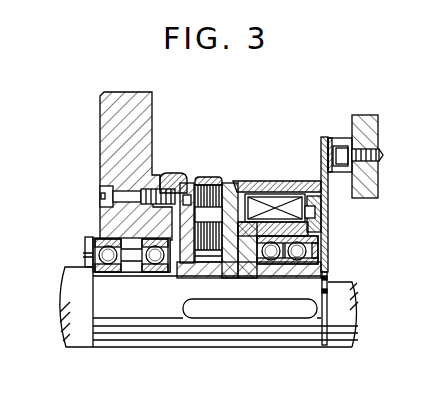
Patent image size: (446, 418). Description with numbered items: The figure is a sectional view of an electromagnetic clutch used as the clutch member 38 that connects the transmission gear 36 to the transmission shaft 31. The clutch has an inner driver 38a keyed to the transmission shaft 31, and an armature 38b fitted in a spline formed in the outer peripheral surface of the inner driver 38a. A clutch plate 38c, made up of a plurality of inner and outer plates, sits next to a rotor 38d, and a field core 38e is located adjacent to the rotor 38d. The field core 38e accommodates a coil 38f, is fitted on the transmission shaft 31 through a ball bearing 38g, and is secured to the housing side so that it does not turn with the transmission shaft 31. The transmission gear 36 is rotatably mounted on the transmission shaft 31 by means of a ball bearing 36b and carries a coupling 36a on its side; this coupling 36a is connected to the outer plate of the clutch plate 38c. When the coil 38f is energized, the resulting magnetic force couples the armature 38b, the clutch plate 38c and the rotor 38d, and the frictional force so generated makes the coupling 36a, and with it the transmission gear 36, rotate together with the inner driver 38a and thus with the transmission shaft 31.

The transmission shaft 31 is at (212, 330).
The transmission gear 36 is at (100, 108).
The coupling 36a is at (168, 172).
The ball bearing 36b is at (98, 255).
The clutch member 38 is at (259, 168).
The inner driver 38a is at (293, 319).
The armature 38b is at (183, 186).
The clutch plate 38c is at (197, 177).
The rotor 38d is at (244, 192).
The field core 38e is at (325, 221).
The coil 38f is at (276, 203).
The ball bearing 38g is at (321, 253).